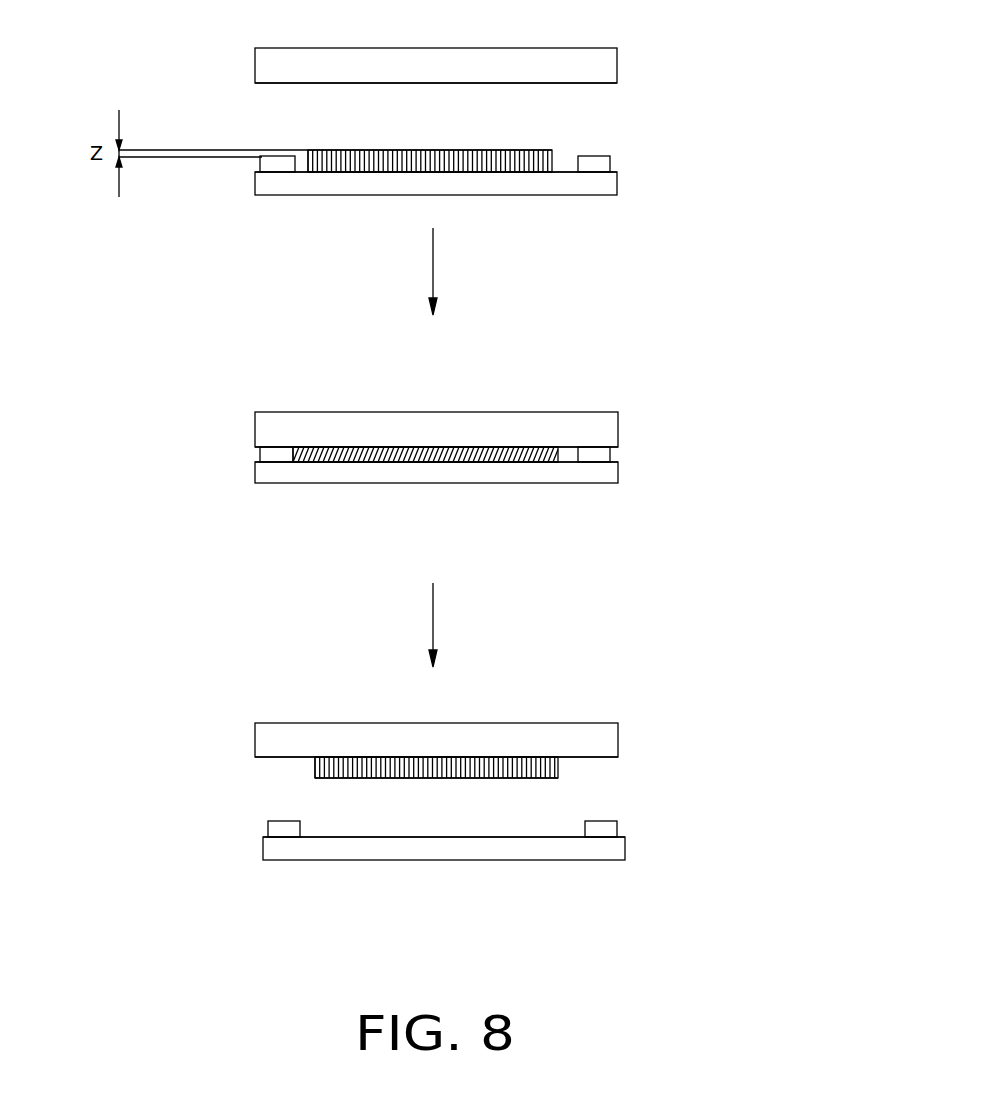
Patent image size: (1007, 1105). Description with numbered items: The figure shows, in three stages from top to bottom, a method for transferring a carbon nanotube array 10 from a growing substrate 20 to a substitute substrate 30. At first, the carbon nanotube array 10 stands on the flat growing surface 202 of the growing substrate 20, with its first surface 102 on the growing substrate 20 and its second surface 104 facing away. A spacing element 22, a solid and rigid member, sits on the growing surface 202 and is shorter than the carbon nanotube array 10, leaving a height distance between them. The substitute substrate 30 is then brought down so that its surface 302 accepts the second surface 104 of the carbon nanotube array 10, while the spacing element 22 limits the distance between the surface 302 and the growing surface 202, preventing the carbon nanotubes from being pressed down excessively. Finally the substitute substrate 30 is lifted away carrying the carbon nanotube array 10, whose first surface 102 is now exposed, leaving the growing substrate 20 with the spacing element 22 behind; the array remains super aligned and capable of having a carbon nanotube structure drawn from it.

The carbon nanotube array 10 is at (522, 150).
The first surface 102 is at (325, 172).
The second surface 104 is at (320, 152).
The growing substrate 20 is at (610, 187).
The growing surface 202 is at (421, 173).
The spacing element 22 is at (610, 163).
The substitute substrate 30 is at (617, 63).
The surface 302 is at (268, 83).